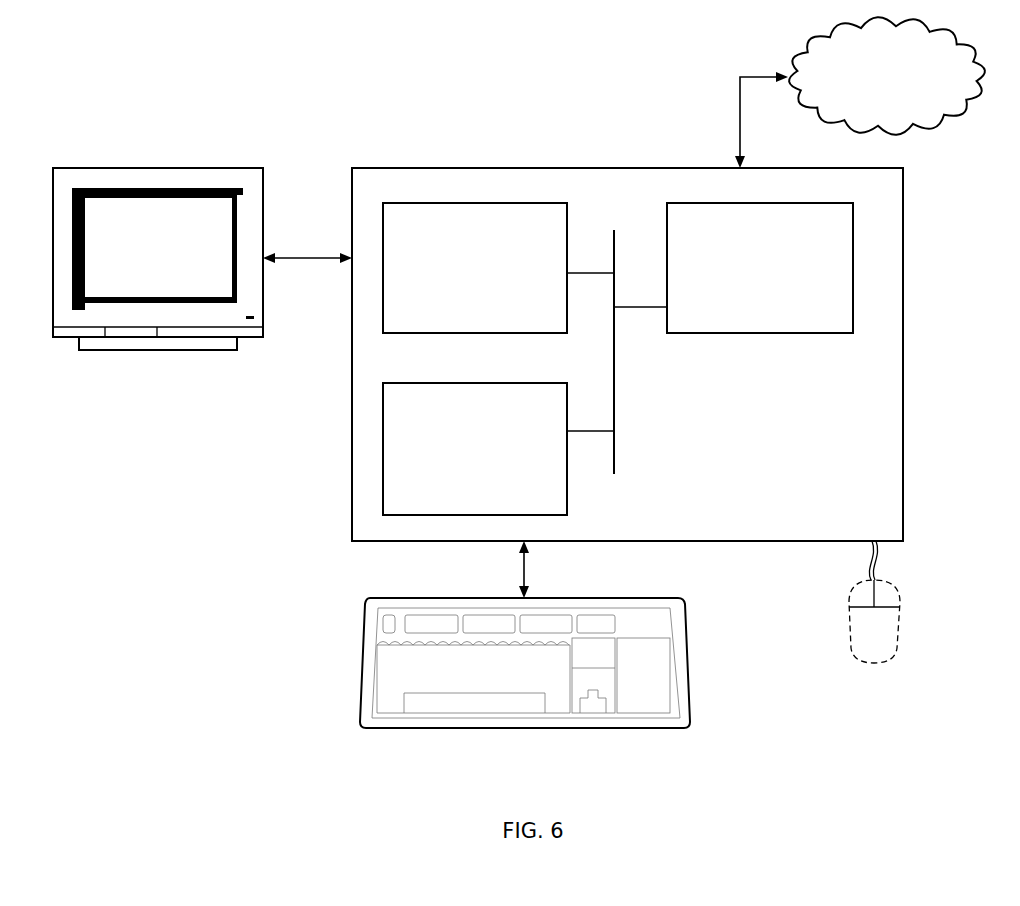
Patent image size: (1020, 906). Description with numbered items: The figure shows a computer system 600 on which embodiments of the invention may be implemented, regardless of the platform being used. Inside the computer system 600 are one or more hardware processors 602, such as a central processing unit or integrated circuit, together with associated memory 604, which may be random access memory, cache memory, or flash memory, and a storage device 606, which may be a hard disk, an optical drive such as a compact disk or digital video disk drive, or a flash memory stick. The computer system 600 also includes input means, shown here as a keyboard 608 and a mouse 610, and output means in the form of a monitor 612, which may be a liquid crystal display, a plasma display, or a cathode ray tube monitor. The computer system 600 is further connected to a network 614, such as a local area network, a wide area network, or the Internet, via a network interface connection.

The computer system 600 is at (338, 73).
The hardware processor 602 is at (760, 268).
The memory 604 is at (475, 268).
The storage device 606 is at (475, 449).
The keyboard 608 is at (525, 634).
The mouse 610 is at (912, 596).
The monitor 612 is at (202, 259).
The network 614 is at (860, 92).